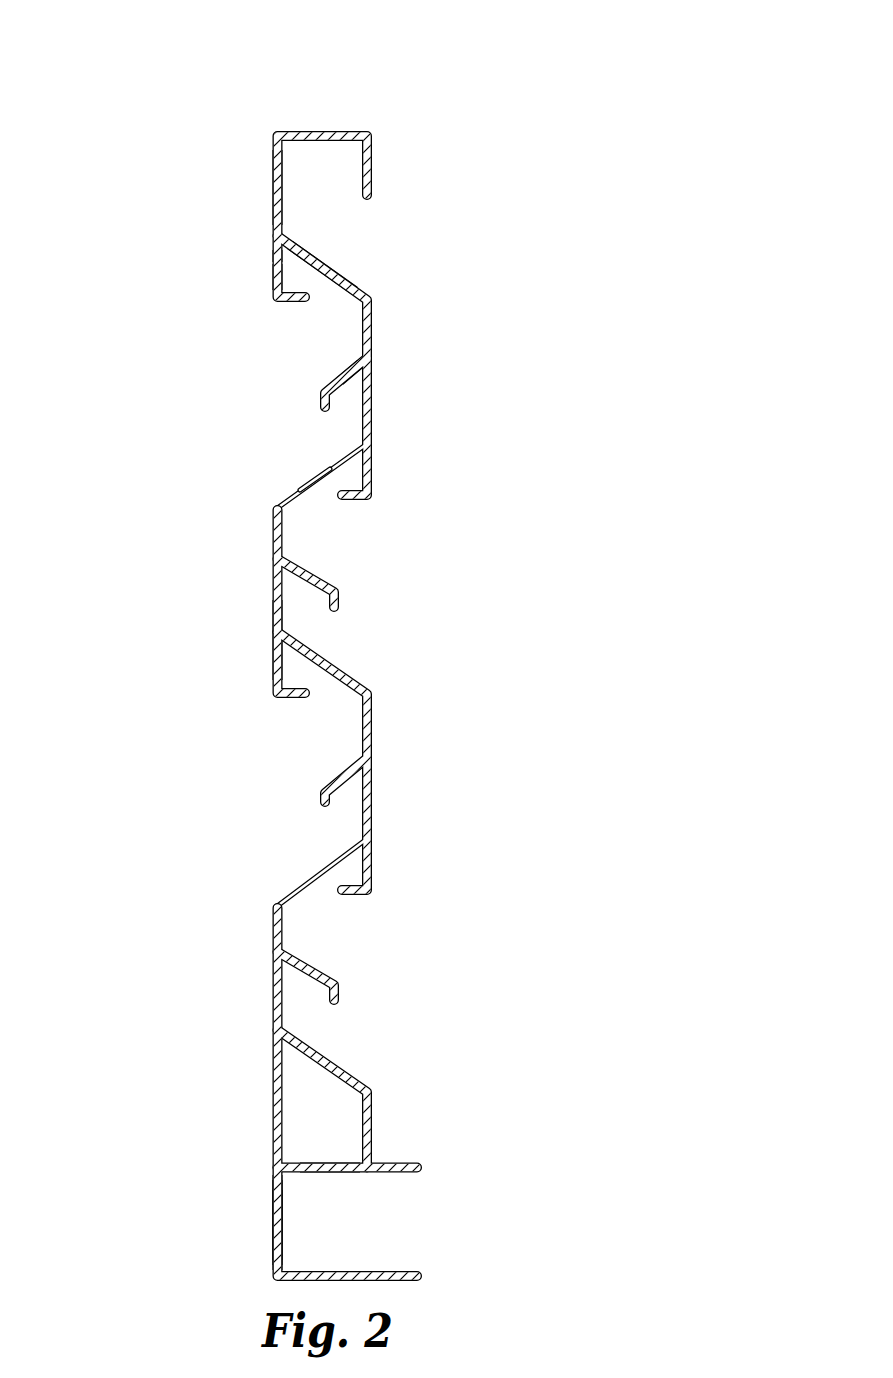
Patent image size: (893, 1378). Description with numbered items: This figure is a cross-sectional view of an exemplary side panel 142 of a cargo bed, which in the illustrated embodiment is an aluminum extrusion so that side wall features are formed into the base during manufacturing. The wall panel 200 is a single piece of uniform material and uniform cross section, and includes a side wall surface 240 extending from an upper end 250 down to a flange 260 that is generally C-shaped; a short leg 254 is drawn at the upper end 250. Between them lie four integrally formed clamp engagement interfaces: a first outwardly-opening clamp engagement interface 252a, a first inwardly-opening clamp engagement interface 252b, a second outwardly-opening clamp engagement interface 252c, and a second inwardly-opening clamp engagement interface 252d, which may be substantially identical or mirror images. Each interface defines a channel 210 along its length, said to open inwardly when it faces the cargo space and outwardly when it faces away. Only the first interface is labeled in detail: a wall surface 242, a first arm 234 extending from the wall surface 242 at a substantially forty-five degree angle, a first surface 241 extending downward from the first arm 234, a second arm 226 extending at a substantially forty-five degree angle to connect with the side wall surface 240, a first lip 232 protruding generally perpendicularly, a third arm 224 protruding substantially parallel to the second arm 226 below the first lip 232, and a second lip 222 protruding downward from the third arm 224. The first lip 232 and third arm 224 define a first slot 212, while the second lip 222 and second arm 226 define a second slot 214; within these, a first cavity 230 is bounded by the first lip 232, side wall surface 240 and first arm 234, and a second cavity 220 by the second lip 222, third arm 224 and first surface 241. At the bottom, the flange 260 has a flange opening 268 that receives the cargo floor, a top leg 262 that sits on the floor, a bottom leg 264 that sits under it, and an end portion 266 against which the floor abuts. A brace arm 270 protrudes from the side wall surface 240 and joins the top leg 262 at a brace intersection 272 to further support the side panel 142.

The wall panel 200 is at (455, 42).
The upper end 250 is at (382, 112).
The clip leg 254 is at (372, 178).
The side wall surface 240 is at (273, 187).
The first outwardly-opening clamp engagement interface 252a is at (130, 306).
The first inwardly-opening clamp engagement interface 252b is at (445, 600).
The second outwardly-opening clamp engagement interface 252c is at (232, 788).
The second inwardly-opening clamp engagement interface 252d is at (450, 980).
The first arm 234 is at (328, 258).
The first surface 241 is at (290, 265).
The first cavity 230 is at (273, 277).
The first lip 232 is at (296, 303).
The third arm 224 is at (328, 380).
The wall surface 242 is at (372, 343).
The first slot 212 is at (292, 348).
The second lip 222 is at (322, 401).
The second cavity 220 is at (360, 405).
The channel 210 is at (222, 394).
The second slot 214 is at (300, 441).
The second arm 226 is at (316, 473).
The side panel 142 is at (170, 572).
The brace arm 270 is at (398, 1080).
The top leg 262 is at (405, 1160).
The brace intersection 272 is at (368, 1178).
The flange 260 is at (232, 1193).
The flange opening 268 is at (420, 1230).
The end portion 266 is at (273, 1222).
The bottom leg 264 is at (410, 1283).